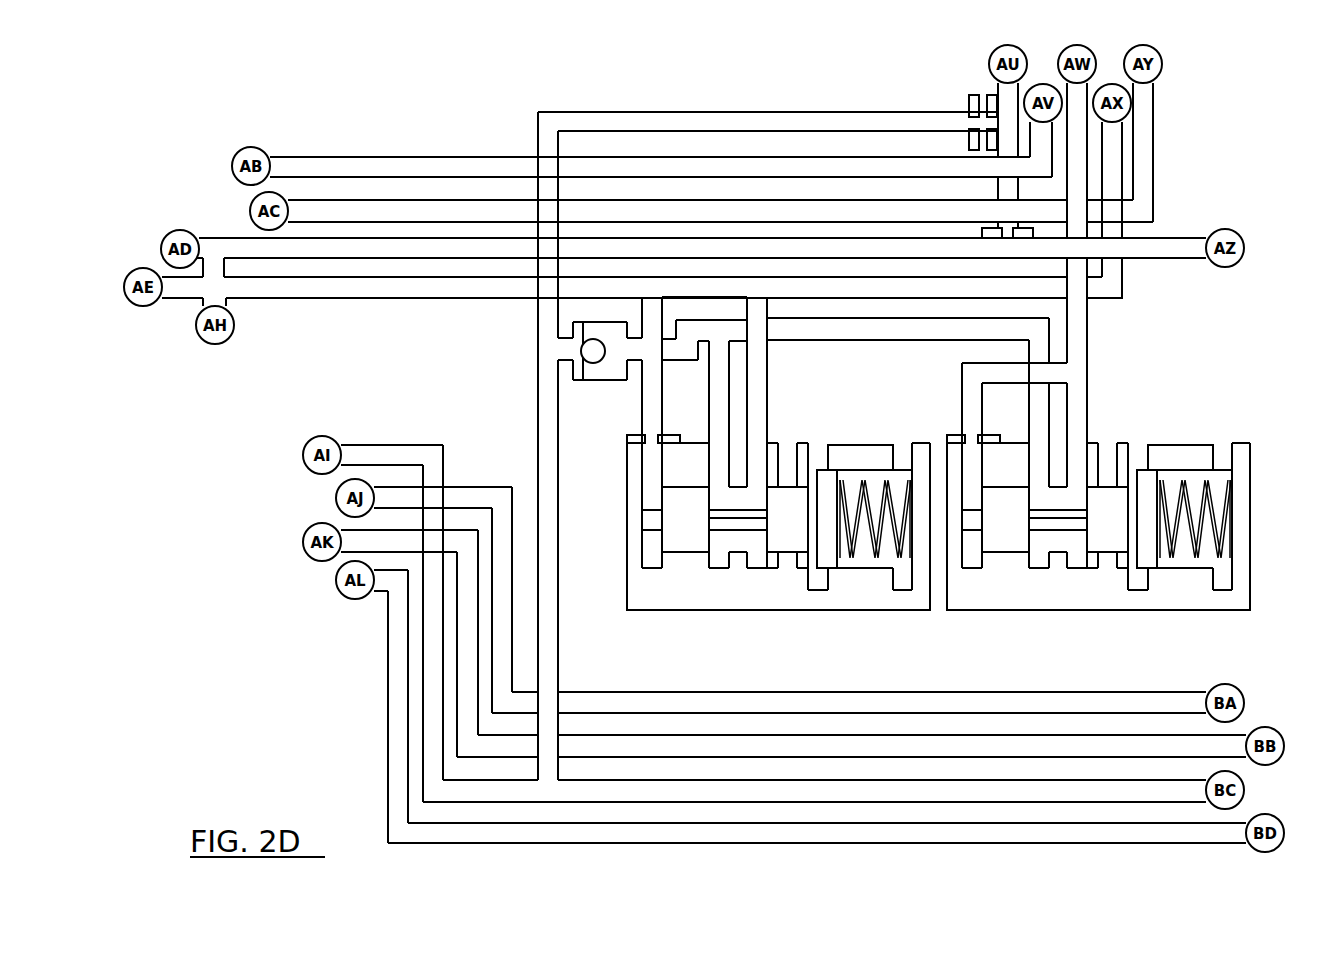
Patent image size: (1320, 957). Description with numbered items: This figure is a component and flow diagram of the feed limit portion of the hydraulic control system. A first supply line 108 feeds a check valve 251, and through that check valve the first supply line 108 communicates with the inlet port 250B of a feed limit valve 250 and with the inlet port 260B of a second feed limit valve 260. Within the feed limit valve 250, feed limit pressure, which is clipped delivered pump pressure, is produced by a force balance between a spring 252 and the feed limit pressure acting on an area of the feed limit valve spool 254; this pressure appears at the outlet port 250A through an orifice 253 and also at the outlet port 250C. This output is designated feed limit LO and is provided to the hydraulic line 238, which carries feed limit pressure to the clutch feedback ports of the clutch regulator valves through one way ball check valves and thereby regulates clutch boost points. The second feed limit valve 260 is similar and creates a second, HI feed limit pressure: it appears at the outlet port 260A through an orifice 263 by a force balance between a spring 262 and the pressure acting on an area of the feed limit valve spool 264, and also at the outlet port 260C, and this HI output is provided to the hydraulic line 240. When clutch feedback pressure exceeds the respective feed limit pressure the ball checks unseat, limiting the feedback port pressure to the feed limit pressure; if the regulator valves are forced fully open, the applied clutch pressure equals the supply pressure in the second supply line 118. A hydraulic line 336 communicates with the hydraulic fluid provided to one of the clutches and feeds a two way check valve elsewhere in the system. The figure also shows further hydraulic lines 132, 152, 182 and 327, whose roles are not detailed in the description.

The first supply line 108 is at (548, 414).
The second supply line 118 is at (308, 252).
The outlet channel 132 is at (672, 833).
The outlet channel 152 is at (825, 707).
The sample channel 182 is at (1190, 750).
The hydraulic line 238 is at (378, 287).
The hydraulic line 240 is at (1080, 330).
The check valve 251 is at (580, 351).
The fluid channel 327 is at (298, 168).
The hydraulic line 336 is at (340, 210).
The feed limit valve 250 is at (750, 513).
The outlet port 250A is at (687, 495).
The inlet port 250B is at (722, 440).
The outlet port 250C is at (757, 443).
The spring 252 is at (877, 563).
The orifice 253 is at (685, 519).
The feed limit valve spool 254 is at (792, 533).
The second feed limit valve 260 is at (1070, 513).
The outlet port 260A is at (948, 450).
The inlet port 260B is at (1105, 430).
The outlet port 260C is at (1124, 447).
The spring 262 is at (1195, 564).
The orifice 263 is at (1005, 519).
The feed limit valve spool 264 is at (1102, 568).